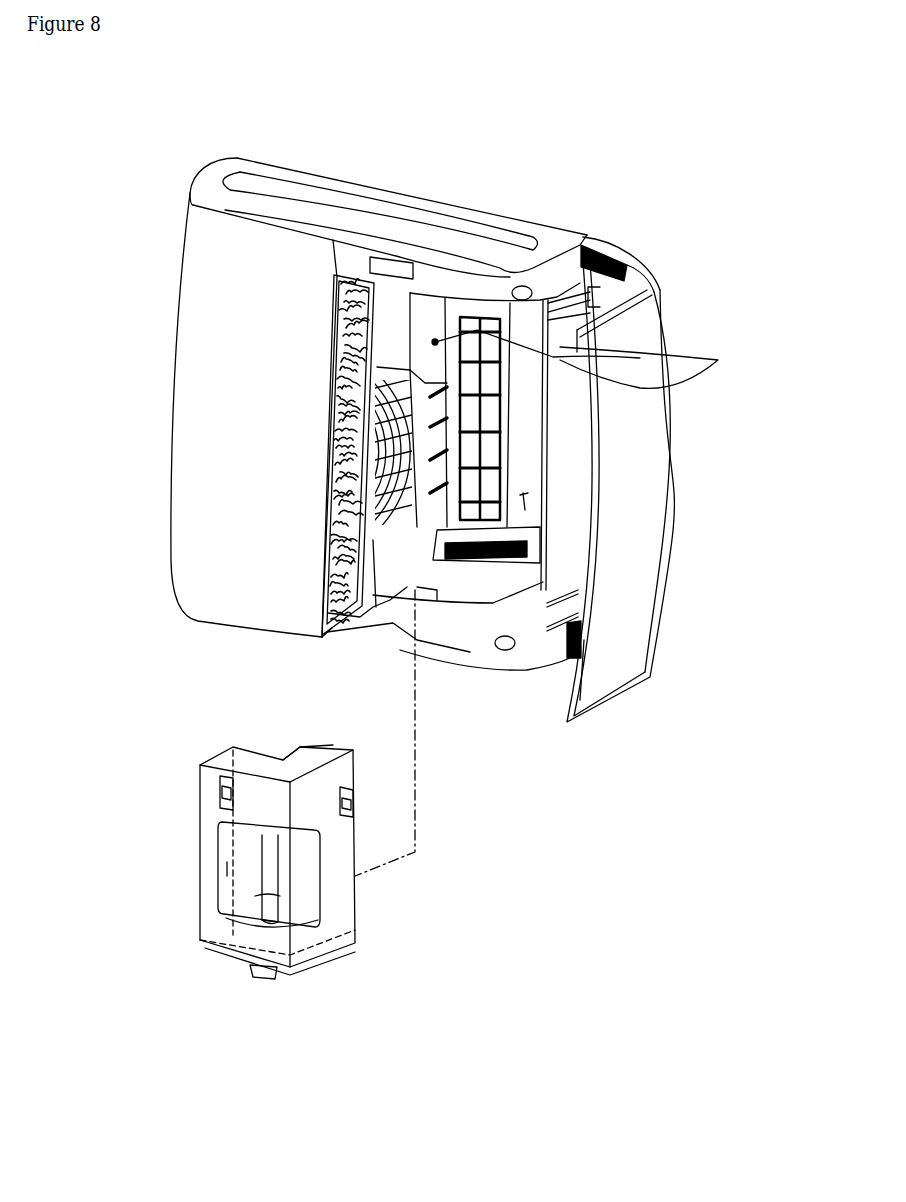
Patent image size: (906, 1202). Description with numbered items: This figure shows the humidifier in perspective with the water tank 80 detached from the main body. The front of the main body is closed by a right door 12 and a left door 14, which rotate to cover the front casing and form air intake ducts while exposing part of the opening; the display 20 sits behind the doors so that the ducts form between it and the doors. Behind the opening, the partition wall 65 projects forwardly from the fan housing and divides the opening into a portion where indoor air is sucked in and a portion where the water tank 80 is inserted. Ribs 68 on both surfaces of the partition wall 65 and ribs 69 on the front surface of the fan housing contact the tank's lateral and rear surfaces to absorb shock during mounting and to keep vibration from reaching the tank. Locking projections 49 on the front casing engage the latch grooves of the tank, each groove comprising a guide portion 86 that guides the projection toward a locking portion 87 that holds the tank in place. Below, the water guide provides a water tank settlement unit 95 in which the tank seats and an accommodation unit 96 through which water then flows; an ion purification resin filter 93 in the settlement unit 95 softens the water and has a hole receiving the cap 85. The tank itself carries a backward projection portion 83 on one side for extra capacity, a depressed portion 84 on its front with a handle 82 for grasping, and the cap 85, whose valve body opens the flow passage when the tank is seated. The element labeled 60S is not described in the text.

The left door 14 is at (268, 258).
The display 20 is at (352, 285).
The locking projection 49 is at (718, 360).
The ribs 68 is at (480, 380).
The partition wall 65 is at (523, 393).
The ribs 69 is at (525, 500).
The right door 12 is at (625, 538).
The side door panel 60S is at (560, 507).
The ion purification resin filter 93 is at (560, 570).
The accommodation unit 96 is at (347, 597).
The water tank settlement unit 95 is at (437, 588).
The backward projection portion 83 is at (327, 752).
The locking portion 87 is at (224, 787).
The guide portion 86 is at (233, 790).
The depressed portion 84 is at (227, 870).
The handle 82 is at (263, 890).
The water tank 80 is at (324, 884).
The cap 85 is at (262, 979).